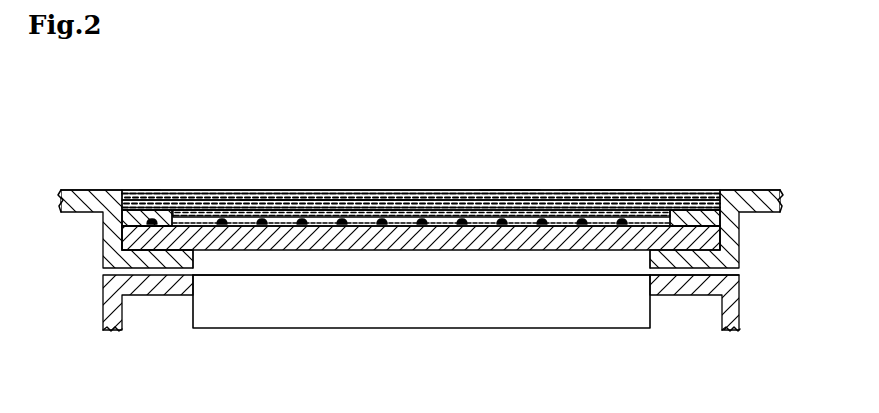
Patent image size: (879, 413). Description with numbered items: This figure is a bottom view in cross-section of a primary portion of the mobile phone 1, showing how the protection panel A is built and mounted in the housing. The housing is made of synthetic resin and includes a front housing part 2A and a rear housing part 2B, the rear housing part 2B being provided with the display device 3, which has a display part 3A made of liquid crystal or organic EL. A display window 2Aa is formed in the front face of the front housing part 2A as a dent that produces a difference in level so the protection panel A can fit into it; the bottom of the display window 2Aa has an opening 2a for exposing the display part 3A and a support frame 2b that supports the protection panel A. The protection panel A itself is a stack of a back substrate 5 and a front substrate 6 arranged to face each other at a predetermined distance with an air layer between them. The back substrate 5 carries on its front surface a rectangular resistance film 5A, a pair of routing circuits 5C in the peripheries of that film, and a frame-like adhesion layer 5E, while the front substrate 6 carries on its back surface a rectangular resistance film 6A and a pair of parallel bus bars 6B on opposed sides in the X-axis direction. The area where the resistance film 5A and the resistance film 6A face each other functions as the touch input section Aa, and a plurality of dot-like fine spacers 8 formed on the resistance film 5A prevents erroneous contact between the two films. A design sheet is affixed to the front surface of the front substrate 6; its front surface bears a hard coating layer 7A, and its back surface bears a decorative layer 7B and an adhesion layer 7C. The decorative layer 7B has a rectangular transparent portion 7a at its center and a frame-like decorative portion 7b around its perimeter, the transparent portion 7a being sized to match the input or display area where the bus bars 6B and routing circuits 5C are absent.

The mobile phone 1 is at (130, 126).
The front housing part 2A is at (746, 190).
The display window 2Aa is at (122, 228).
The rear housing part 2B is at (742, 305).
The opening 2a is at (650, 262).
The support frame 2b is at (677, 265).
The display device 3 is at (430, 307).
The display part 3A is at (287, 273).
The back substrate 5 is at (495, 250).
The resistance film 5A is at (365, 226).
The routing circuits 5C is at (150, 192).
The adhesion layer 5E is at (130, 190).
The front substrate 6 is at (697, 214).
The resistance film 6A is at (562, 214).
The bus bars 6B is at (173, 208).
The hard coating layer 7A is at (322, 200).
The decorative layer 7B is at (270, 120).
The transparent portion 7a is at (270, 190).
The decorative portion 7b is at (181, 212).
The adhesion layer 7C is at (413, 212).
The spacers 8 is at (382, 220).
The protection panel A is at (597, 150).
The touch input section Aa is at (500, 190).